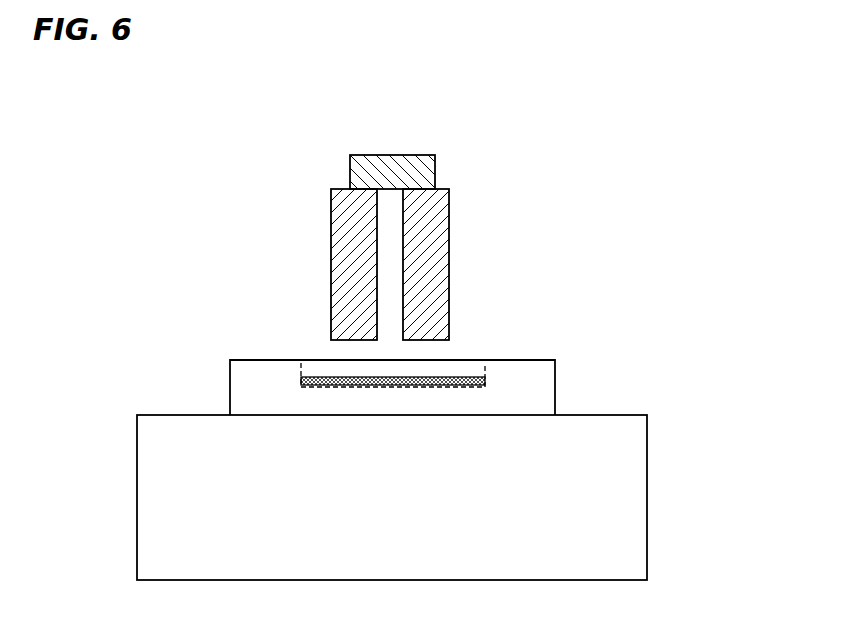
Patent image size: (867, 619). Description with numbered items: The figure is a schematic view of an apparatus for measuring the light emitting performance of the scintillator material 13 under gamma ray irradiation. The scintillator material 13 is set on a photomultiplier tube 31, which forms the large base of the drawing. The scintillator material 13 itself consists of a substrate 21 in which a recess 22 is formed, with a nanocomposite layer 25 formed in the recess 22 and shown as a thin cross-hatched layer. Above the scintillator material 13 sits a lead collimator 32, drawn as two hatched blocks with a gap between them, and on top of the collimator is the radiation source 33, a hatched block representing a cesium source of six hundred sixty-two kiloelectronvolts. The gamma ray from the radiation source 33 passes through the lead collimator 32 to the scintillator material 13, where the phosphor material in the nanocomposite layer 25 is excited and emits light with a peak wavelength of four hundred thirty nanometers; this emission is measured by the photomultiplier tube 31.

The scintillator material 13 is at (590, 369).
The substrate 21 is at (240, 387).
The recess 22 is at (318, 372).
The nanocomposite layer 25 is at (467, 378).
The photomultiplier tube 31 is at (608, 500).
The lead collimator 32 is at (448, 247).
The radiation source 33 is at (407, 165).